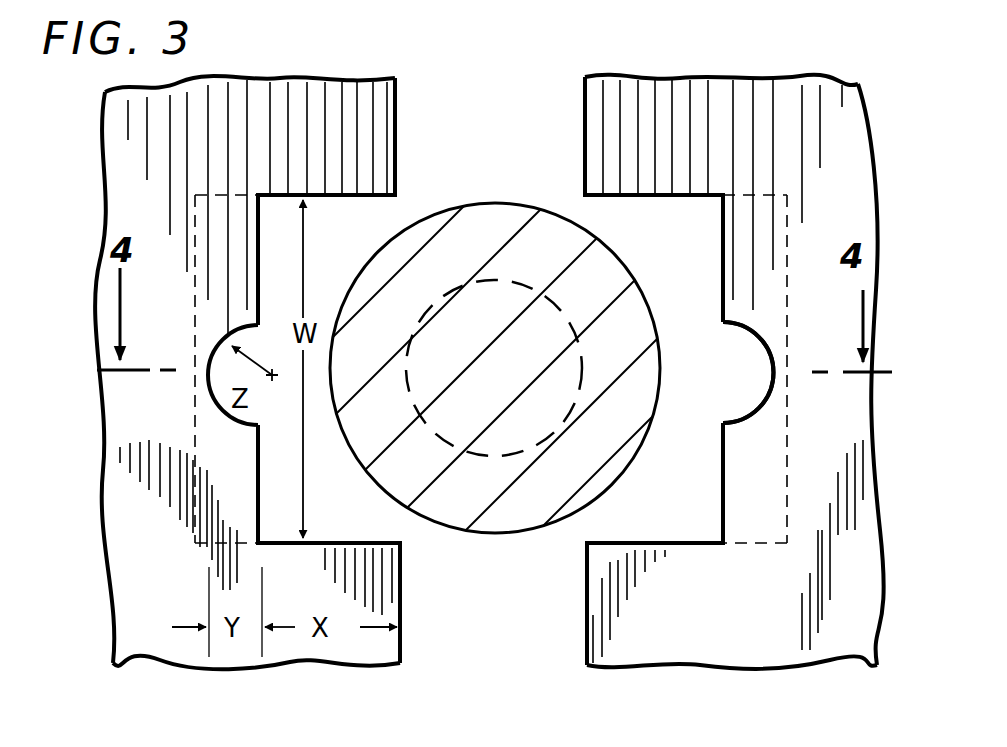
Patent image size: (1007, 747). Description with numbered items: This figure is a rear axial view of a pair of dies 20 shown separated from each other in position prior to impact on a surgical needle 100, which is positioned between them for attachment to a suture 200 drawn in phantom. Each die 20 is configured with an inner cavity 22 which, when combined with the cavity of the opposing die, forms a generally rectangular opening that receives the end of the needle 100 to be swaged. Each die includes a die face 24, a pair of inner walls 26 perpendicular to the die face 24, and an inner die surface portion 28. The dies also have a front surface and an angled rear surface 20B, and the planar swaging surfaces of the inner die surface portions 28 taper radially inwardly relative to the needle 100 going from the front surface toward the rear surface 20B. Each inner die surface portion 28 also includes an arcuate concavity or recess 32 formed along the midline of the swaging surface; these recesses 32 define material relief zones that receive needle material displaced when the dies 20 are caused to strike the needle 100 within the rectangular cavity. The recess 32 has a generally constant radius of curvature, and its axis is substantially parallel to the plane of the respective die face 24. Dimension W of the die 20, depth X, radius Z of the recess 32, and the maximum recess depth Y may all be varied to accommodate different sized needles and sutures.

The die 20 is at (647, 72).
The angled rear surface 20B is at (795, 586).
The inner cavity 22 is at (650, 512).
The die face 24 is at (402, 130).
The inner walls 26 is at (690, 200).
The inner die surface portion 28 is at (716, 252).
The arcuate recess 32 is at (763, 389).
The surgical needle 100 is at (588, 490).
The suture 200 is at (464, 456).